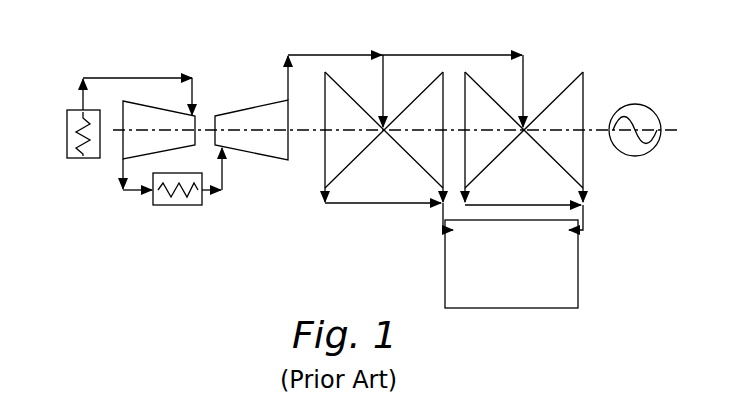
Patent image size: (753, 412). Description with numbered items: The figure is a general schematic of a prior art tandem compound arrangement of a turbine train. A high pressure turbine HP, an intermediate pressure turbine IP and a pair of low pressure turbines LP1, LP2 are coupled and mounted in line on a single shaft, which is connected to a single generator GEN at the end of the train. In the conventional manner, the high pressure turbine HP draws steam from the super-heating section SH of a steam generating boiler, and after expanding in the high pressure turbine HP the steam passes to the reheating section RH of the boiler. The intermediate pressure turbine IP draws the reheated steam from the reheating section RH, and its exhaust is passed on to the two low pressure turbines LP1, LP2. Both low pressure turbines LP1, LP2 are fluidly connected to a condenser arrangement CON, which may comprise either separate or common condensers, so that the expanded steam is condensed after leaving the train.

The super-heating section SH is at (83, 158).
The high pressure turbine HP is at (152, 107).
The reheating section RH is at (172, 205).
The intermediate pressure turbine IP is at (250, 109).
The low pressure turbine LP1 is at (325, 160).
The low pressure turbine LP2 is at (487, 92).
The condenser arrangement CON is at (511, 264).
The generator GEN is at (632, 156).